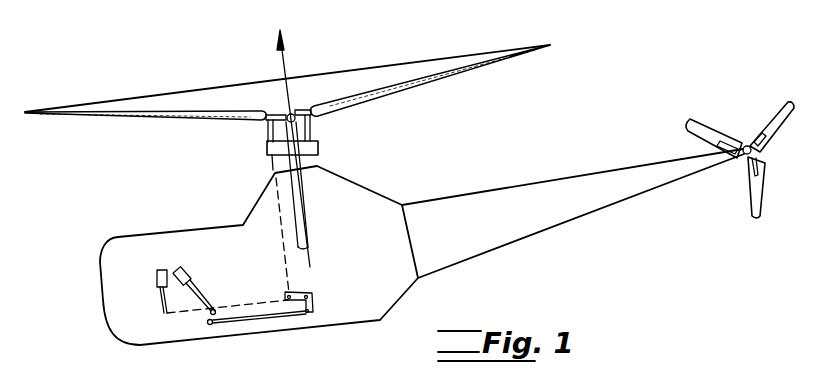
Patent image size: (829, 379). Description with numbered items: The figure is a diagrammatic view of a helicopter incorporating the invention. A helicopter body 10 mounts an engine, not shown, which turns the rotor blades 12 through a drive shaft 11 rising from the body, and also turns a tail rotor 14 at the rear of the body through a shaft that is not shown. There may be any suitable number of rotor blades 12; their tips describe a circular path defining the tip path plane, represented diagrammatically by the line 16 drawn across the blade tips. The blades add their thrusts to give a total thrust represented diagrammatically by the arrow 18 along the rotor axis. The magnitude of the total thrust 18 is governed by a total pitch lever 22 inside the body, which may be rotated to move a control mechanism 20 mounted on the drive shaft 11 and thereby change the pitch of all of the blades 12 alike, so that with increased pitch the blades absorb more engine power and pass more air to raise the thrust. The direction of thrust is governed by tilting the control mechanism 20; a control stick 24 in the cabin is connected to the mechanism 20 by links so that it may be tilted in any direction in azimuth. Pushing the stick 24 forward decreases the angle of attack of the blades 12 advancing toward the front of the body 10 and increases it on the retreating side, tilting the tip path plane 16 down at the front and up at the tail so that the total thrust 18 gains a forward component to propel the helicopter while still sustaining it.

The helicopter body 10 is at (418, 280).
The drive shaft 11 is at (306, 188).
The rotor blades 12 is at (147, 122).
The tail rotor 14 is at (716, 130).
The tip path plane 16 is at (397, 63).
The total thrust 18 is at (285, 60).
The control mechanism 20 is at (320, 149).
The total pitch lever 22 is at (188, 270).
The control stick 24 is at (158, 272).